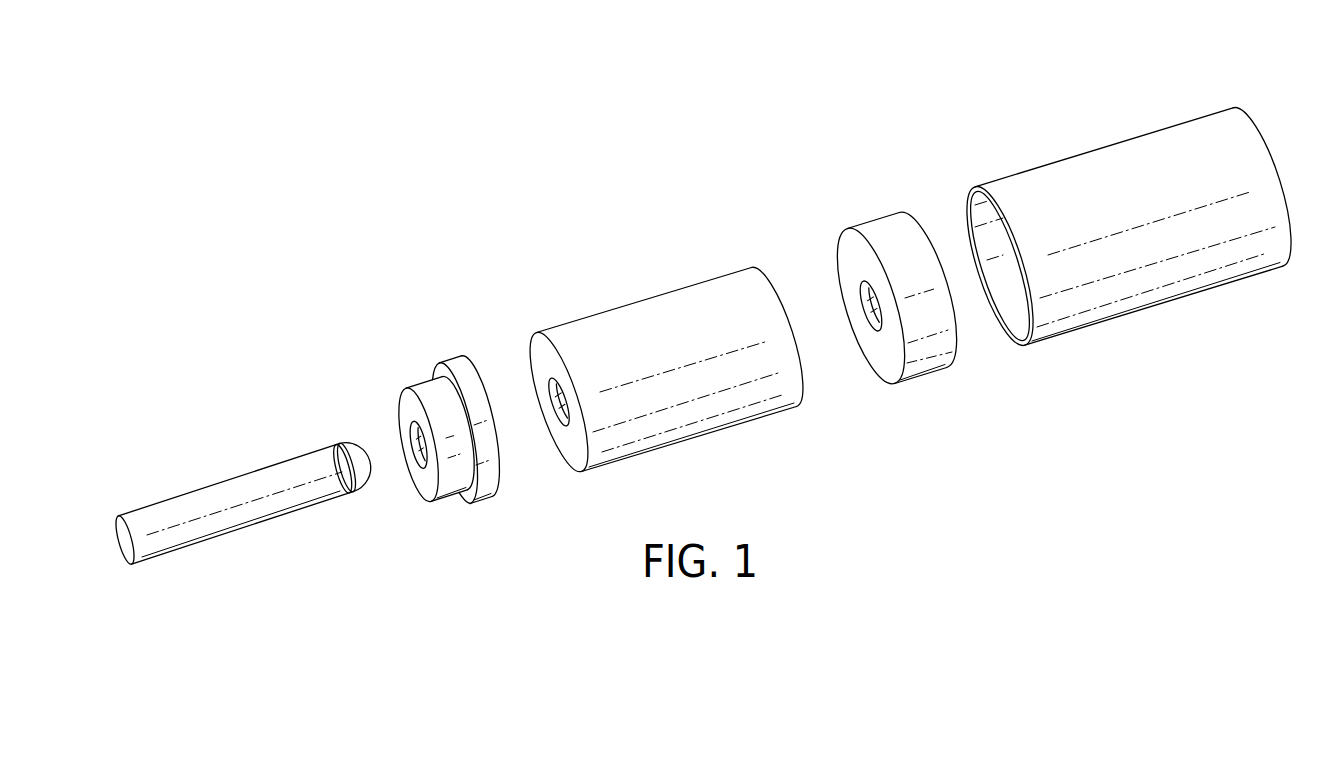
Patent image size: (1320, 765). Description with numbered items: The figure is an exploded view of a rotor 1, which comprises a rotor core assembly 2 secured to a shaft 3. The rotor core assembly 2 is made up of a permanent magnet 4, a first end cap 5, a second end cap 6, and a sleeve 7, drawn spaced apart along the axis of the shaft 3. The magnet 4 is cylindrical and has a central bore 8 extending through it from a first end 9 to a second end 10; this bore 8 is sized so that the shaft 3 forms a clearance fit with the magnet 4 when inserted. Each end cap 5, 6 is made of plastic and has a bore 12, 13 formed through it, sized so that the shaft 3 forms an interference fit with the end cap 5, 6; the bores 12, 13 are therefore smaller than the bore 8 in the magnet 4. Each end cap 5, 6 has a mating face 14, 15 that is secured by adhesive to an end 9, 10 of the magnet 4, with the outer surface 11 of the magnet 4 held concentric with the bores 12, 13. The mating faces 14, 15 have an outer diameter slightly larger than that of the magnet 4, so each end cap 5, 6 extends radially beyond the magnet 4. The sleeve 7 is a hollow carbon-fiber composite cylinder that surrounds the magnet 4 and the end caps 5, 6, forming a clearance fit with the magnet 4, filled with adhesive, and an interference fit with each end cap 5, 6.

The rotor 1 is at (291, 317).
The rotor core assembly 2 is at (1220, 64).
The shaft 3 is at (240, 476).
The permanent magnet 4 is at (650, 298).
The first end cap 5 is at (441, 362).
The second end cap 6 is at (878, 220).
The sleeve 7 is at (1096, 152).
The central bore 8 is at (553, 414).
The first end 9 is at (568, 454).
The second end 10 is at (757, 273).
The outer surface 11 is at (693, 438).
The bore 12 is at (413, 463).
The bore 13 is at (868, 318).
The mating face 14 is at (465, 365).
The mating face 15 is at (880, 363).